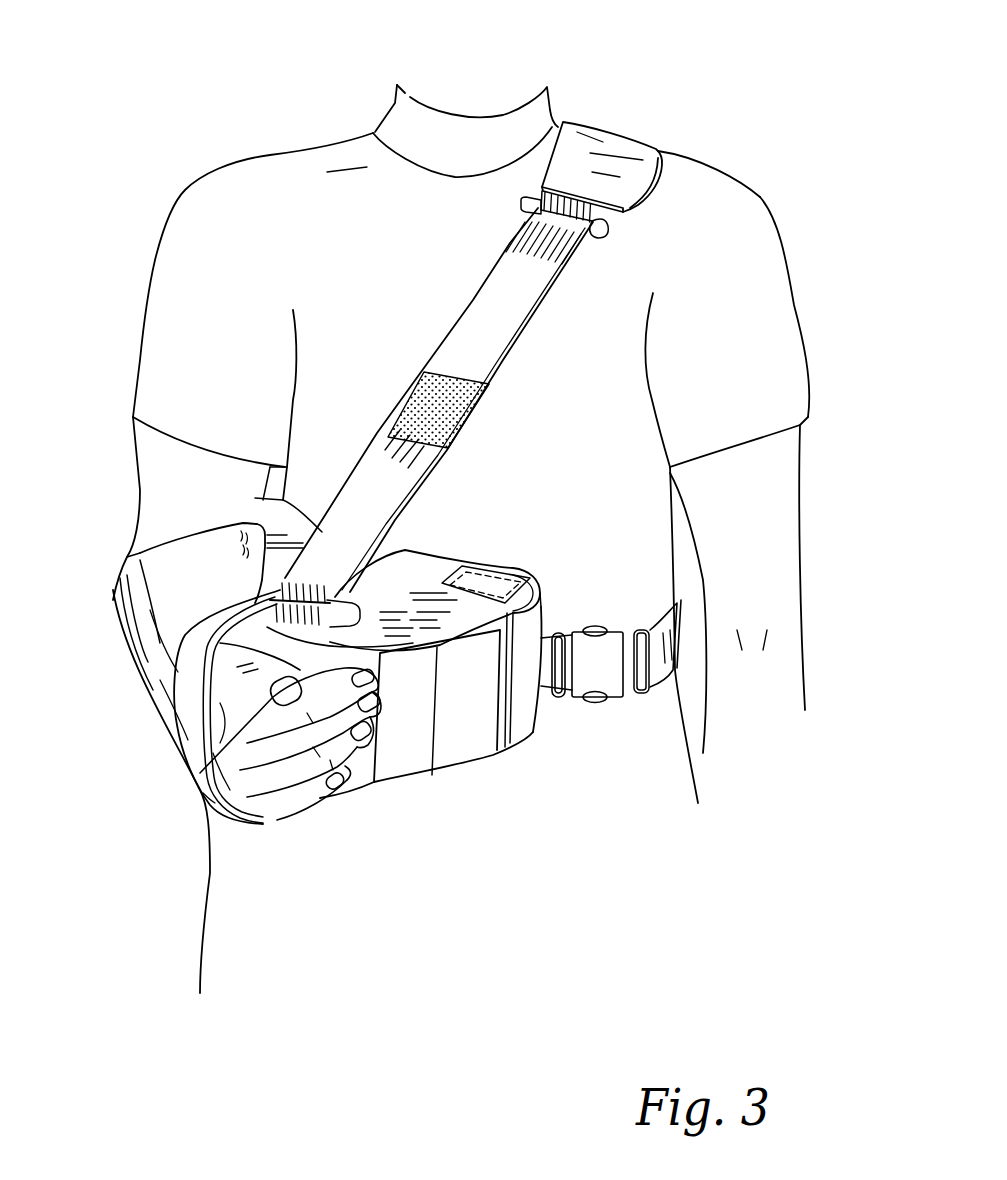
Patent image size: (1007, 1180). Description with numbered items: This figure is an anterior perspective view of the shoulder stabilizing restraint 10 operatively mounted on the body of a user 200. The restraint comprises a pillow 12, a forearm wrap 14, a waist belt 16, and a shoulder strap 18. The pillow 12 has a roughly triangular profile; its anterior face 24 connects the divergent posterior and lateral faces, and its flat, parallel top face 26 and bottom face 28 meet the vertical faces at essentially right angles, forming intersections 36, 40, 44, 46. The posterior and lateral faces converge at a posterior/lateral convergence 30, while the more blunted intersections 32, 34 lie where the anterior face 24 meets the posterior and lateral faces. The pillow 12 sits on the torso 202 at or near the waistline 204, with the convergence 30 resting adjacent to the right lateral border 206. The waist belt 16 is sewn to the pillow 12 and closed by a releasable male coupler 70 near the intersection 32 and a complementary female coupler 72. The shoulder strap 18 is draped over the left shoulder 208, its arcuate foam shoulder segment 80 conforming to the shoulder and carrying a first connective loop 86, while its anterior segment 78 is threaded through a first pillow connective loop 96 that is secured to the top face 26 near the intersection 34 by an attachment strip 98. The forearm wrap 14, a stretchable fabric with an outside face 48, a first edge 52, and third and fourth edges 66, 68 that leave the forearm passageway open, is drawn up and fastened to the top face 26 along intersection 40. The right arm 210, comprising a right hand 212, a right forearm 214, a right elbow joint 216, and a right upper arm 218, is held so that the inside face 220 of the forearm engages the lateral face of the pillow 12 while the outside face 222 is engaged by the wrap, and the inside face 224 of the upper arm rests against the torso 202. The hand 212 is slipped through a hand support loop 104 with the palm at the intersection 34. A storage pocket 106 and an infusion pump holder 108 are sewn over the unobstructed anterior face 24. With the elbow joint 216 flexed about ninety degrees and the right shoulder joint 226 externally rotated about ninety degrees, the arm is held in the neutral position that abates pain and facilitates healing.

The shoulder stabilizing restraint 10 is at (229, 66).
The pillow 12 is at (355, 782).
The forearm wrap 14 is at (137, 560).
The waist belt 16 is at (687, 623).
The shoulder strap 18 is at (513, 313).
The anterior face 24 is at (405, 783).
The top face 26 is at (440, 585).
The bottom face 28 is at (523, 745).
The posterior/lateral convergence 30 is at (267, 500).
The intersection 32 is at (540, 587).
The intersection 34 is at (203, 793).
The intersection 36 is at (313, 527).
The intersection 40 is at (255, 500).
The intersection 44 is at (430, 617).
The intersection 46 is at (433, 785).
The outside face 48 is at (147, 607).
The first edge 52 is at (307, 546).
The third edge 66 is at (207, 533).
The fourth edge 68 is at (178, 638).
The releasable male coupler 70 is at (600, 630).
The releasable female coupler 72 is at (625, 700).
The anterior segment 78 is at (443, 402).
The shoulder segment 80 is at (613, 145).
The first connective loop 86 is at (600, 217).
The first pillow connective loop 96 is at (263, 590).
The attachment strip 98 is at (392, 585).
The hand support loop 104 is at (173, 728).
The storage pocket 106 is at (457, 740).
The infusion pump holder 108 is at (527, 713).
The user 200 is at (777, 266).
The torso 202 is at (410, 270).
The waistline 204 is at (672, 675).
The right lateral border 206 is at (283, 500).
The left shoulder 208 is at (738, 212).
The right arm 210 is at (152, 393).
The right hand 212 is at (280, 820).
The right forearm 214 is at (182, 728).
The right elbow joint 216 is at (137, 530).
The right upper arm 218 is at (152, 435).
The inside face 220 is at (167, 660).
The outside face 222 is at (170, 685).
The inside face 224 is at (292, 414).
The right shoulder joint 226 is at (238, 170).